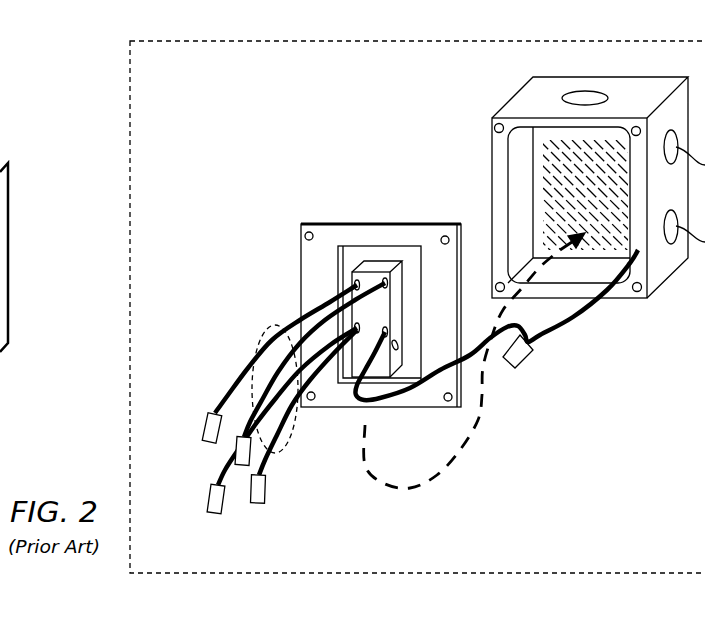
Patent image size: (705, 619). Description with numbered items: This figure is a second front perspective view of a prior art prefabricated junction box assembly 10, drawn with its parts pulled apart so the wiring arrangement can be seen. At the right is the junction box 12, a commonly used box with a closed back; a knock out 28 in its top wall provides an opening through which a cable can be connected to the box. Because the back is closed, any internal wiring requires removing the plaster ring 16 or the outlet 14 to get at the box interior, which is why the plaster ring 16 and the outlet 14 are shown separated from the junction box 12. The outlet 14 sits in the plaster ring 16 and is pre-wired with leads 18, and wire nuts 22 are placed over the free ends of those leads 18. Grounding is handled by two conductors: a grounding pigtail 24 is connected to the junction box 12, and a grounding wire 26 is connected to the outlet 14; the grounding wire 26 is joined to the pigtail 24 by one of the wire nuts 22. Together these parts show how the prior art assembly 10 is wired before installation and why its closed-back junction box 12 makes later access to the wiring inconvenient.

The prefabricated junction box assembly 10 is at (112, 69).
The junction box 12 is at (502, 207).
The outlet 14 is at (376, 267).
The plaster ring 16 is at (342, 235).
The leads 18 is at (293, 433).
The wire nuts 22 is at (210, 415).
The grounding pigtail 24 is at (587, 313).
The grounding wire 26 is at (463, 360).
The knock out 28 is at (585, 97).